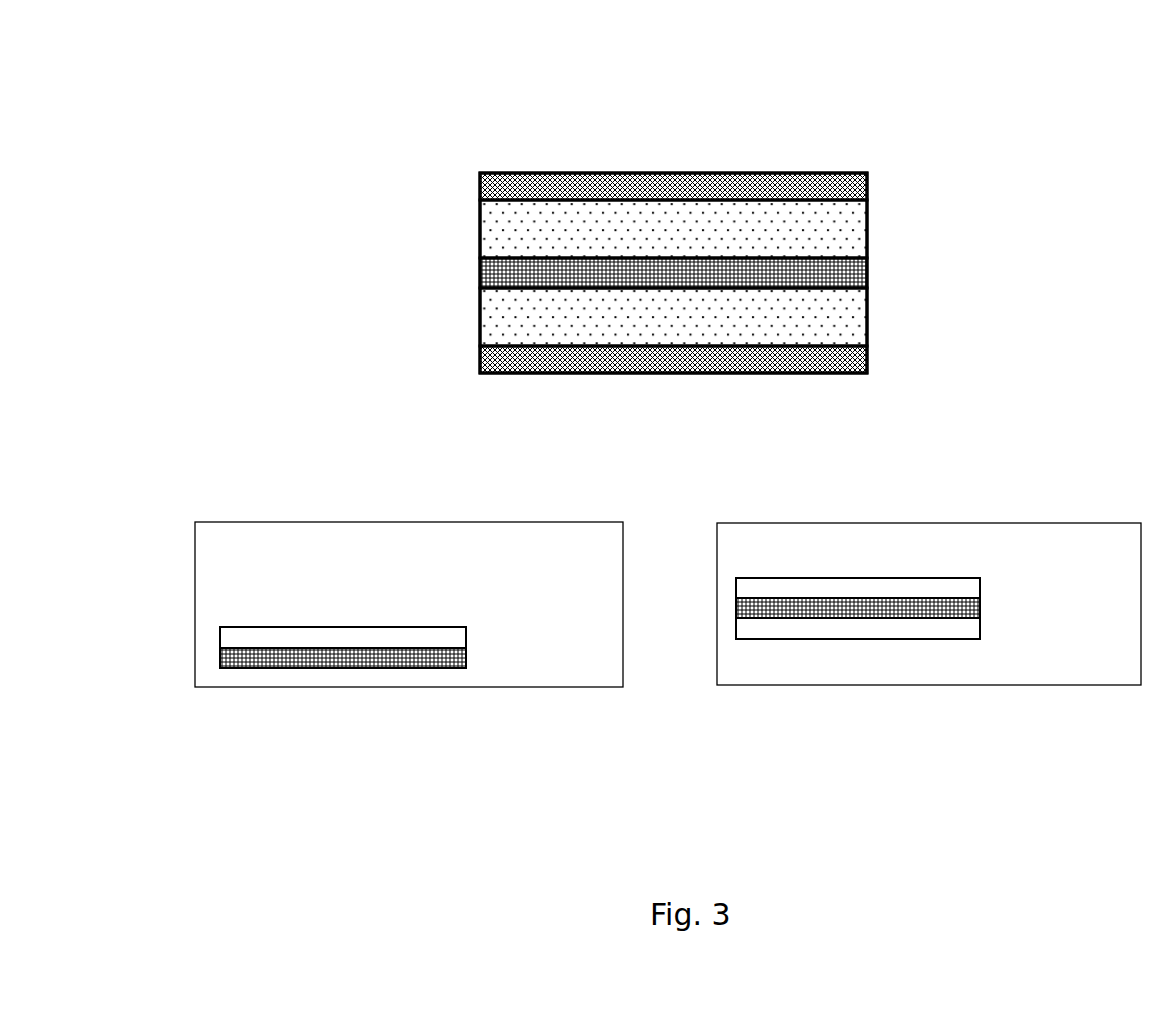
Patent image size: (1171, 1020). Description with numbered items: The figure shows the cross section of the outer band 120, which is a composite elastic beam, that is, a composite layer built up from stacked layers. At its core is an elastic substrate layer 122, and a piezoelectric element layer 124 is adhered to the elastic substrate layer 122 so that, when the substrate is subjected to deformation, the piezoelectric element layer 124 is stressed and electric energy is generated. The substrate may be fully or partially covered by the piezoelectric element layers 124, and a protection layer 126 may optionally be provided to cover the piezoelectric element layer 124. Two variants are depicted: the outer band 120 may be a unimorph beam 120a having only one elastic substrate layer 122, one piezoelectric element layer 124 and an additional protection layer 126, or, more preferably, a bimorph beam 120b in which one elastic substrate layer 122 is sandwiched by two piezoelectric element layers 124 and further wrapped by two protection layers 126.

The outer band 120 is at (916, 81).
The unimorph beam 120a is at (513, 486).
The bimorph beam 120b is at (1030, 486).
The elastic substrate layer 122 is at (850, 273).
The piezoelectric element layer 124 is at (478, 635).
The protection layer 126 is at (918, 359).